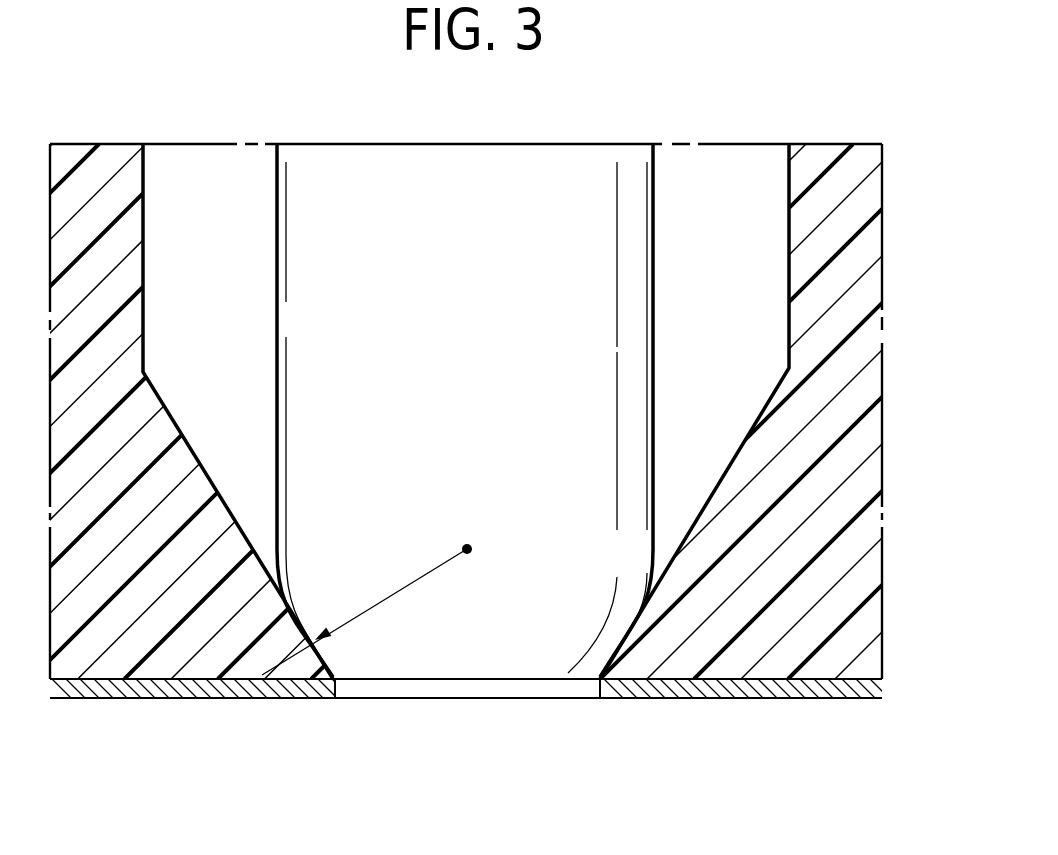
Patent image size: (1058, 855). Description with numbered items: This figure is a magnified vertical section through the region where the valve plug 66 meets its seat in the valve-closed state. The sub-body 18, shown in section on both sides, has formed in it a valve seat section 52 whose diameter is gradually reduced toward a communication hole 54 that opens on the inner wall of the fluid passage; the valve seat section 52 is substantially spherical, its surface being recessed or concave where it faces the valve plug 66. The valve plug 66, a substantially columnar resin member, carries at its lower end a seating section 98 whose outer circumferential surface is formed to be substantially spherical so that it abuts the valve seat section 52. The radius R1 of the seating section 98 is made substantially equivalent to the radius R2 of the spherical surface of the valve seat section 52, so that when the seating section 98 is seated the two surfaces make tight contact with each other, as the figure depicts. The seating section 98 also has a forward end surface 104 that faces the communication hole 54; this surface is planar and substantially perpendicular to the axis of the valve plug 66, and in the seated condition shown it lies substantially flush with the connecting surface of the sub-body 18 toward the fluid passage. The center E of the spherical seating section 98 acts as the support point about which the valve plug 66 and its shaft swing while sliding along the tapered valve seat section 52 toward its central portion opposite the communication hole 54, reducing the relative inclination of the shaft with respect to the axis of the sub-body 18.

The sub-body 18 is at (843, 213).
The valve plug 66 is at (595, 270).
The valve seat section 52 is at (318, 679).
The communication hole 54 is at (599, 697).
The seating section 98 is at (610, 637).
The forward end surface 104 is at (473, 680).
The center of the seating section E is at (472, 546).
The radius of the seating section R1 is at (364, 612).
The radius of the surface of the valve seat section R2 is at (431, 606).